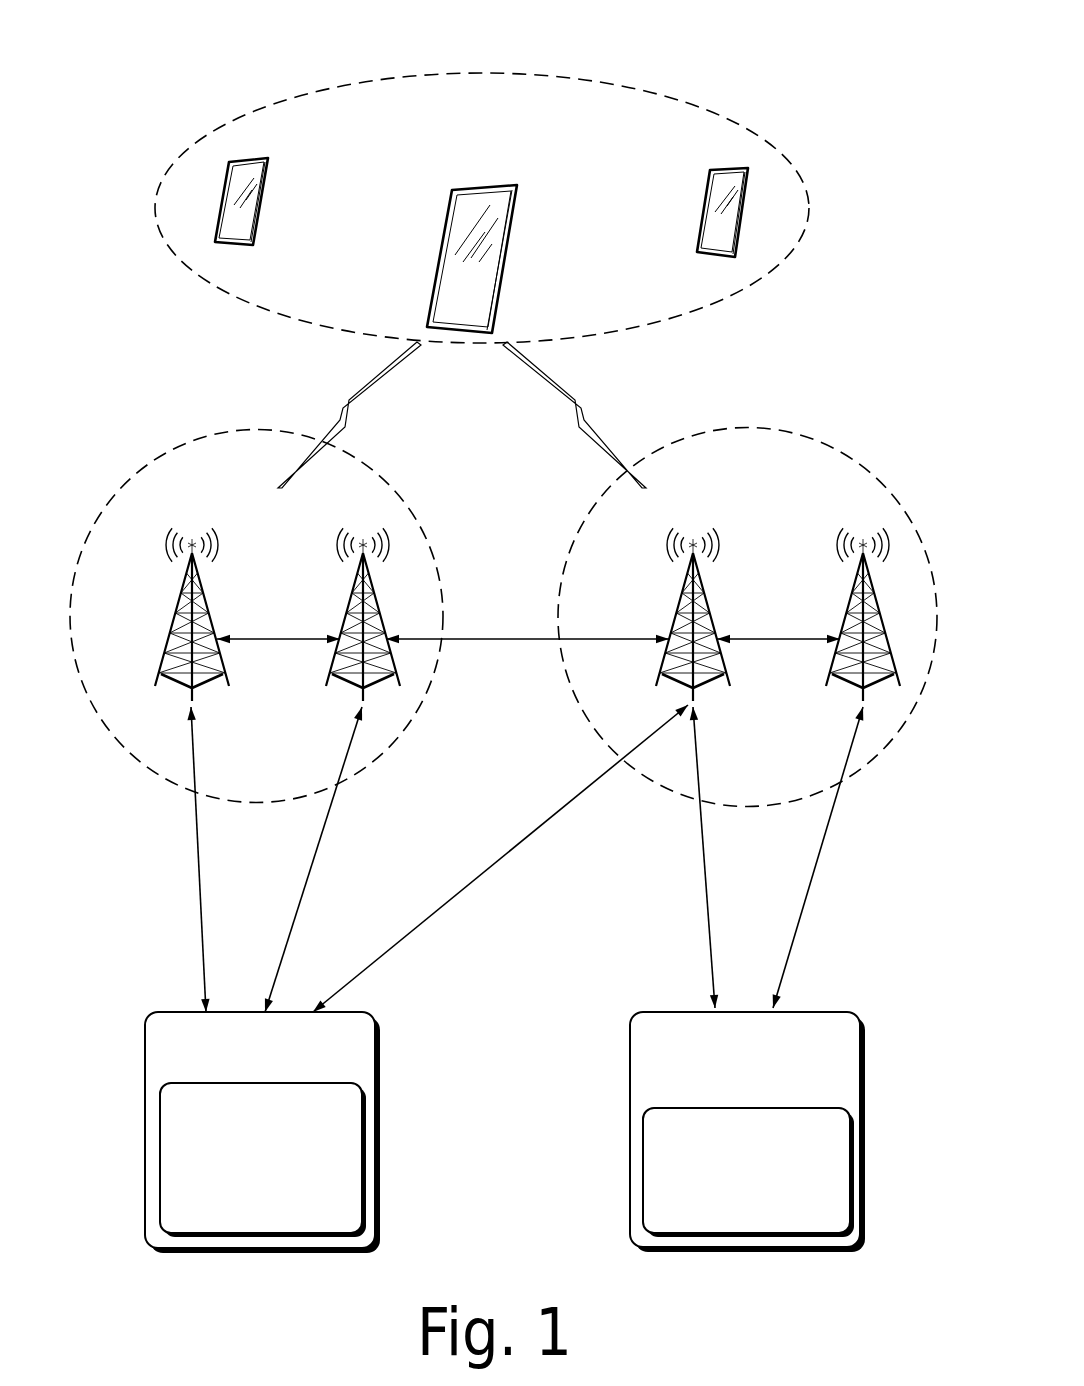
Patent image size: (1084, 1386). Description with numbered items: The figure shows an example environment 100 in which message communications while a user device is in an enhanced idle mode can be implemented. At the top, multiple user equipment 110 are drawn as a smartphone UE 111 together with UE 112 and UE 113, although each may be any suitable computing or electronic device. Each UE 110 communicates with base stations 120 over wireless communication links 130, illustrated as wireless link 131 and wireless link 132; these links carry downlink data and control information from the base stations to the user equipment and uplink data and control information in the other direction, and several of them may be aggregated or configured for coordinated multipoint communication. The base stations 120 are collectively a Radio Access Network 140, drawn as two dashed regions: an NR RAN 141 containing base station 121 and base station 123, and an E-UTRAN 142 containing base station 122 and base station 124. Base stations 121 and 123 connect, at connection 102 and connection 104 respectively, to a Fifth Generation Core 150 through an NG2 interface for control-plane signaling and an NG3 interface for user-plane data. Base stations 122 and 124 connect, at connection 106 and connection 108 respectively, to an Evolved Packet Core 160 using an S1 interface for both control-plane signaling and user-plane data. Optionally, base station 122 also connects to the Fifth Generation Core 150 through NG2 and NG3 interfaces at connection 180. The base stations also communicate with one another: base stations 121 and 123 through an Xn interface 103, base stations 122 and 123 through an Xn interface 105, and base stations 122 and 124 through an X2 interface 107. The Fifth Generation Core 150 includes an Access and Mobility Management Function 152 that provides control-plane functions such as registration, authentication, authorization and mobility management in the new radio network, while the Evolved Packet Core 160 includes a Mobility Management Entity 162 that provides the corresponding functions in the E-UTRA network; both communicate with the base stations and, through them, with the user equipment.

The environment 100 is at (194, 31).
The user equipment 110 is at (729, 117).
The UE 111 is at (522, 181).
The UE 112 is at (277, 154).
The UE 113 is at (706, 166).
The base stations 120 is at (247, 506).
The base station 121 is at (173, 599).
The base station 122 is at (675, 599).
The base station 123 is at (343, 599).
The base station 124 is at (847, 599).
The wireless communication links 130 is at (588, 367).
The wireless link 131 is at (327, 407).
The wireless link 132 is at (603, 407).
The Radio Access Network 140 is at (499, 443).
The NR RAN 141 is at (406, 487).
The E-UTRAN 142 is at (600, 487).
The connection 102 is at (204, 850).
The connection 104 is at (320, 850).
The connection 106 is at (697, 849).
The connection 108 is at (816, 849).
The Xn interface 103 is at (299, 650).
The Xn interface 105 is at (536, 650).
The X2 interface 107 is at (813, 650).
The connection 180 is at (482, 886).
The Fifth Generation Core 150 is at (262, 1132).
The Access and Mobility Management Function 152 is at (263, 1160).
The Evolved Packet Core 160 is at (747, 1132).
The Mobility Management Entity 162 is at (748, 1172).